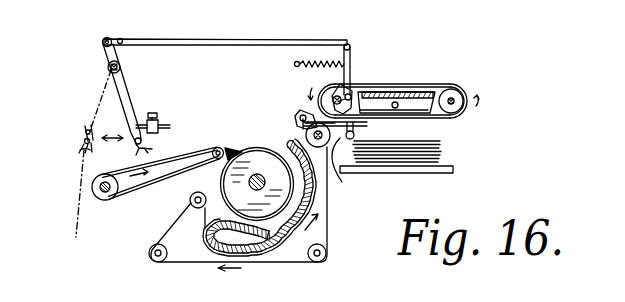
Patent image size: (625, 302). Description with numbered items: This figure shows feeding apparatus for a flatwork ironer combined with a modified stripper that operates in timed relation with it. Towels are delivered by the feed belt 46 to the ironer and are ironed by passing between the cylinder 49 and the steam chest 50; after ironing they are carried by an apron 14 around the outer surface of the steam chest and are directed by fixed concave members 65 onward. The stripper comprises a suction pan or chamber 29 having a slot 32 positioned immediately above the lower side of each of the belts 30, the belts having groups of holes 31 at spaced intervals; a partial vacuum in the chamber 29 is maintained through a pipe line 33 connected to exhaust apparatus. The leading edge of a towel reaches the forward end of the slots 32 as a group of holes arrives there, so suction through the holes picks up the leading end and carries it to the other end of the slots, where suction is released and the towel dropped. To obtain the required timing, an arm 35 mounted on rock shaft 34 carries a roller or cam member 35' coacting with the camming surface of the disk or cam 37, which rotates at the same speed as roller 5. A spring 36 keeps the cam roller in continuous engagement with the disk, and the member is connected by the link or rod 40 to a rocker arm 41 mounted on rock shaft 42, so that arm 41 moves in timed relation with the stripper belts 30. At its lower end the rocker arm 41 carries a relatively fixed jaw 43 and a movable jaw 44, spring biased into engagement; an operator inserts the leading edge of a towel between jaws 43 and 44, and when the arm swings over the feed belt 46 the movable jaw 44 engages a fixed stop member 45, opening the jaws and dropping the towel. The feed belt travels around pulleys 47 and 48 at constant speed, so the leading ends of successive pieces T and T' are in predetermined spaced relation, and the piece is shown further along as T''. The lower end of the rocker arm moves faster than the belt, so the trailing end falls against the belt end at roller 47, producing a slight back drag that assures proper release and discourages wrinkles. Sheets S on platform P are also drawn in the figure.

The link or rod 40 is at (194, 42).
The rocker arm 41 is at (122, 85).
The rock shaft 42 is at (107, 65).
The fixed jaw 43 is at (135, 147).
The movable jaw 44 is at (87, 127).
The fixed stop member 45 is at (143, 118).
The feed belt 46 is at (191, 150).
The pulley 47 is at (107, 198).
The pulley 48 is at (170, 184).
The cylinder 49 is at (220, 180).
The steam chest 50 is at (208, 233).
The apron 14 is at (327, 205).
The spring 36 is at (295, 64).
The arm 35 is at (372, 62).
The roller or cam member 35' is at (370, 74).
The roller 5 is at (320, 87).
The disk or cam 37 is at (315, 117).
The fixed concave member 65 is at (302, 117).
The suction pan or chamber 29 is at (462, 84).
The stripper belt 30 is at (466, 88).
The group of holes 31 is at (363, 83).
The slot 32 is at (395, 112).
The pipe line 33 is at (396, 102).
The rock shaft 34 is at (347, 170).
The stack of sheets S is at (437, 150).
The platform P is at (427, 174).
The piece T is at (62, 193).
The piece T' is at (97, 166).
The ticket position T'' is at (232, 139).